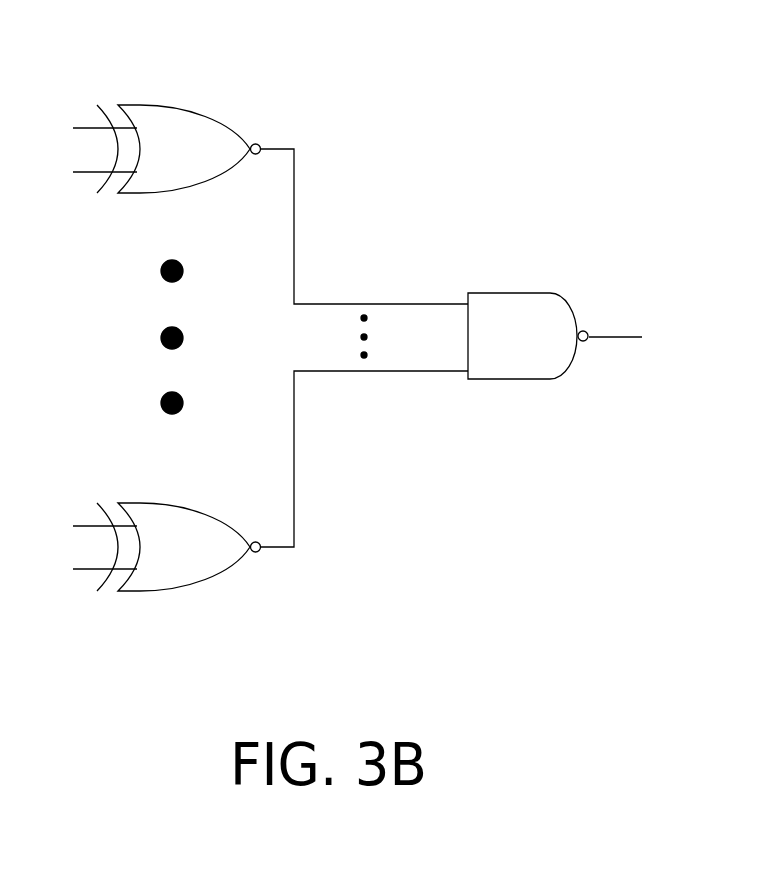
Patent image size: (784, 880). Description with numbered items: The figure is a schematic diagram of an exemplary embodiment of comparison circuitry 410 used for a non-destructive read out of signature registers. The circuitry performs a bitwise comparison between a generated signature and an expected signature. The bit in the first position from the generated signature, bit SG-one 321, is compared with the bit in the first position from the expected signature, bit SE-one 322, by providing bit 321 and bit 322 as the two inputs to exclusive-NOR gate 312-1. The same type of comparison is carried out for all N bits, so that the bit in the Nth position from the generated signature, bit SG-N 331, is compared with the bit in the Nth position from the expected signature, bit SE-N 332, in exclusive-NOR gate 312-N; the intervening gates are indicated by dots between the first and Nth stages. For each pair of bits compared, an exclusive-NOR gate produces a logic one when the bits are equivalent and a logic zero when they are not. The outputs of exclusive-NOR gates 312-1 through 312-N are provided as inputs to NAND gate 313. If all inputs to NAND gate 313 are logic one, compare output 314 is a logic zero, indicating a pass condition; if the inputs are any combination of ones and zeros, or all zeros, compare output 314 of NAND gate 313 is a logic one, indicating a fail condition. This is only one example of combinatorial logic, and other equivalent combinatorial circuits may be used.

The comparison circuitry 410 is at (413, 60).
The exclusive-NOR gate 312-1 is at (208, 160).
The exclusive-NOR gate 312-N is at (212, 556).
The bit SG-1 321 is at (73, 128).
The bit SE-1 322 is at (73, 172).
The bit SG-N 331 is at (73, 526).
The bit SE-N 332 is at (73, 569).
The NAND gate 313 is at (540, 346).
The compare output 314 is at (623, 336).